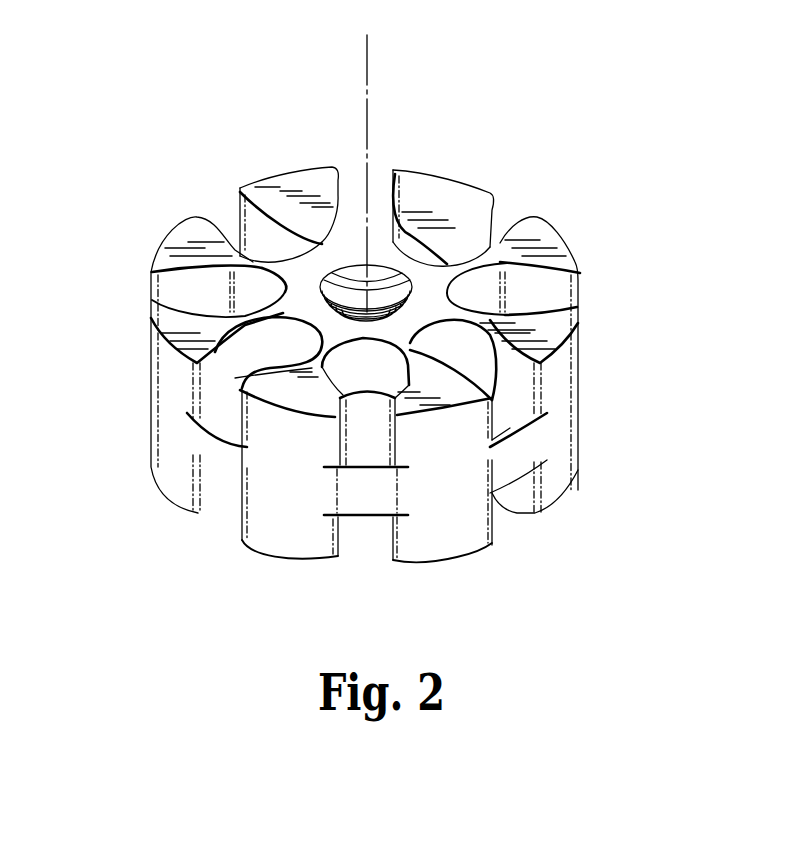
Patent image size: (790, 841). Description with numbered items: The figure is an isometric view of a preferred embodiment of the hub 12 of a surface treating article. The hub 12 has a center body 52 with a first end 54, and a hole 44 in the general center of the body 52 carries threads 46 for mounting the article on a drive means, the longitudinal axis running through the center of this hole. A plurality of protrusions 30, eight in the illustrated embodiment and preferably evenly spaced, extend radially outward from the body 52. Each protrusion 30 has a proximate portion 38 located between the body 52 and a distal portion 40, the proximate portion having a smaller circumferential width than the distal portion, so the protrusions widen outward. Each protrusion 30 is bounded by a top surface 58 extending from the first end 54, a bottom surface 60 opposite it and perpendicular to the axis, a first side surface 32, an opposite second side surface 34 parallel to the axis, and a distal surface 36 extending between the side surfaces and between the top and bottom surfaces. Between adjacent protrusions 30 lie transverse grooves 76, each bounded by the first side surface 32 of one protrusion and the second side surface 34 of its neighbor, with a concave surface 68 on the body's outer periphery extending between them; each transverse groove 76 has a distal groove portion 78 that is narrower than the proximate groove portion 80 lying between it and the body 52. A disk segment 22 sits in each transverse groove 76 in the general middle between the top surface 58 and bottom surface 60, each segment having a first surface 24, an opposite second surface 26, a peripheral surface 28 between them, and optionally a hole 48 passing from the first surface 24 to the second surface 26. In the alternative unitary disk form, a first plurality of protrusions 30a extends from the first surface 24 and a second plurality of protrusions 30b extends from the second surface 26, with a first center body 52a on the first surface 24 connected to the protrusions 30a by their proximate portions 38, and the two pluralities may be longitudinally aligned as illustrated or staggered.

The hub 12 is at (354, 360).
The disk segment 22 is at (214, 470).
The first surface 24 is at (186, 470).
The second surface 26 is at (252, 455).
The peripheral surface 28 is at (511, 463).
The protrusion 30 is at (556, 233).
The first plurality of protrusions 30a is at (163, 363).
The second plurality of protrusions 30b is at (163, 473).
The first side surface 32 is at (545, 280).
The second side surface 34 is at (518, 222).
The distal surface 36 is at (450, 420).
The proximate portion 38 is at (412, 348).
The distal portion 40 is at (441, 470).
The hole 44 is at (368, 285).
The threads 46 is at (400, 390).
The hole 48 is at (372, 428).
The center body 52 is at (335, 256).
The first center body 52a is at (256, 290).
The first end 54 is at (267, 272).
The top surface 58 is at (490, 385).
The bottom surface 60 is at (415, 413).
The concave surface 68 is at (335, 377).
The transverse groove 76 is at (413, 376).
The distal groove portion 78 is at (382, 430).
The proximate groove portion 80 is at (337, 420).